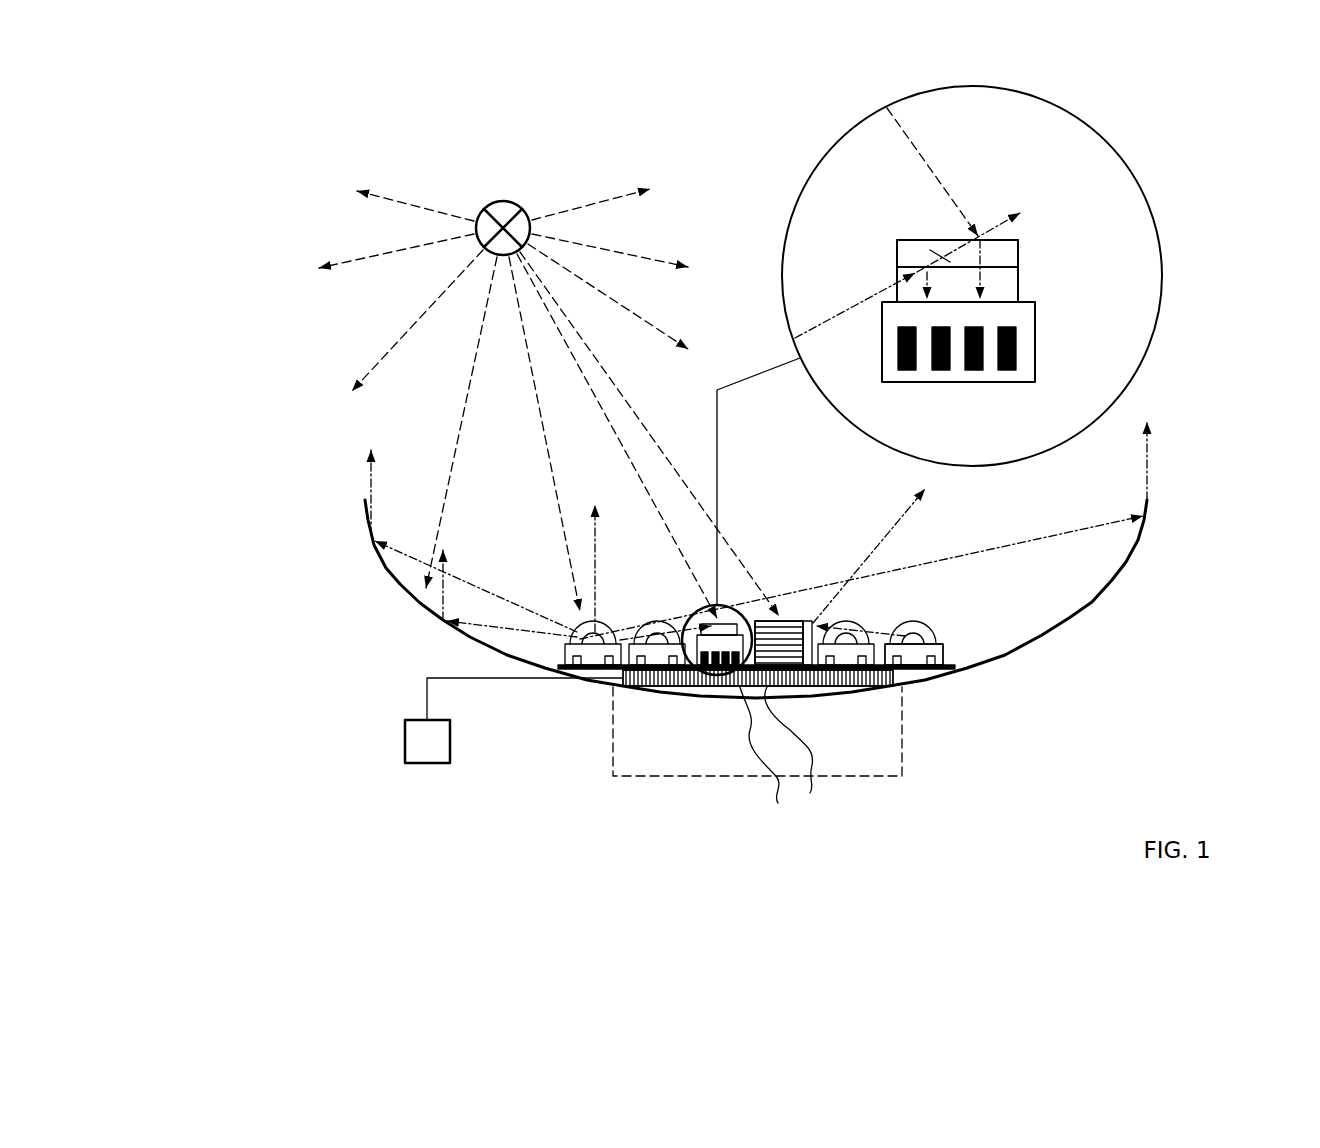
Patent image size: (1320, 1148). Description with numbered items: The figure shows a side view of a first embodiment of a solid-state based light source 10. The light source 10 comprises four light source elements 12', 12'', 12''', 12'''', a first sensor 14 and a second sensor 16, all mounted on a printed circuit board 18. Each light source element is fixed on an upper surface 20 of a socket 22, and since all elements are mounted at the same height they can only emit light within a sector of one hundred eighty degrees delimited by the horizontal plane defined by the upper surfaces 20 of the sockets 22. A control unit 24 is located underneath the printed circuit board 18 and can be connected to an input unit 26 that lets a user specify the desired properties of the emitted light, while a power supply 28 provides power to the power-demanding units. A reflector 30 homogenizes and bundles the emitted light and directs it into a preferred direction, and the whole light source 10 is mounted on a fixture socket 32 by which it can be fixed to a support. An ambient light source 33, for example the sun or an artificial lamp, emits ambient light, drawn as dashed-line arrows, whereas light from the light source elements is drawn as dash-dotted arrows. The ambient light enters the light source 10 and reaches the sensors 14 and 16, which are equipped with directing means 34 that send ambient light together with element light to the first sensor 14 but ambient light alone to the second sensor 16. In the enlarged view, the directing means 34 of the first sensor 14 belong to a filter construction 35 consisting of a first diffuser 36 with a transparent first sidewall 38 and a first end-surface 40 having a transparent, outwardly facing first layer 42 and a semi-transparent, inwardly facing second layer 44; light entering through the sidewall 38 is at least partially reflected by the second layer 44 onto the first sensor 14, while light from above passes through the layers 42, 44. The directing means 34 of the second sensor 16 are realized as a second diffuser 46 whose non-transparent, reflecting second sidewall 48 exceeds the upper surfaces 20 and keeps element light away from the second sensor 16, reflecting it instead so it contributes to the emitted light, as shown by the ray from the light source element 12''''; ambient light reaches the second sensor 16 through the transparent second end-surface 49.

The solid-state based light source 10 is at (252, 525).
The light source element 12' is at (577, 619).
The light source element 12'' is at (657, 613).
The light source element 12''' is at (856, 622).
The light source element 12'''' is at (922, 615).
The first sensor 14 is at (730, 625).
The second sensor 16 is at (797, 620).
The printed circuit board 18 is at (918, 684).
The upper surface 20 is at (943, 647).
The socket 22 is at (946, 656).
The control unit 24 is at (812, 687).
The input unit 26 is at (405, 740).
The power supply 28 is at (813, 792).
The reflector 30 is at (400, 586).
The fixture socket 32 is at (613, 745).
The ambient light source 33 is at (503, 201).
The directing means 34 is at (1048, 290).
The filter construction 35 is at (1048, 245).
The first diffuser 36 is at (1005, 282).
The first sidewall 38 is at (897, 270).
The first end-surface 40 is at (897, 255).
The first layer 42 is at (900, 240).
The second layer 44 is at (940, 265).
The second diffuser 46 is at (783, 630).
The second sidewall 48 is at (758, 621).
The second end-surface 49 is at (813, 622).